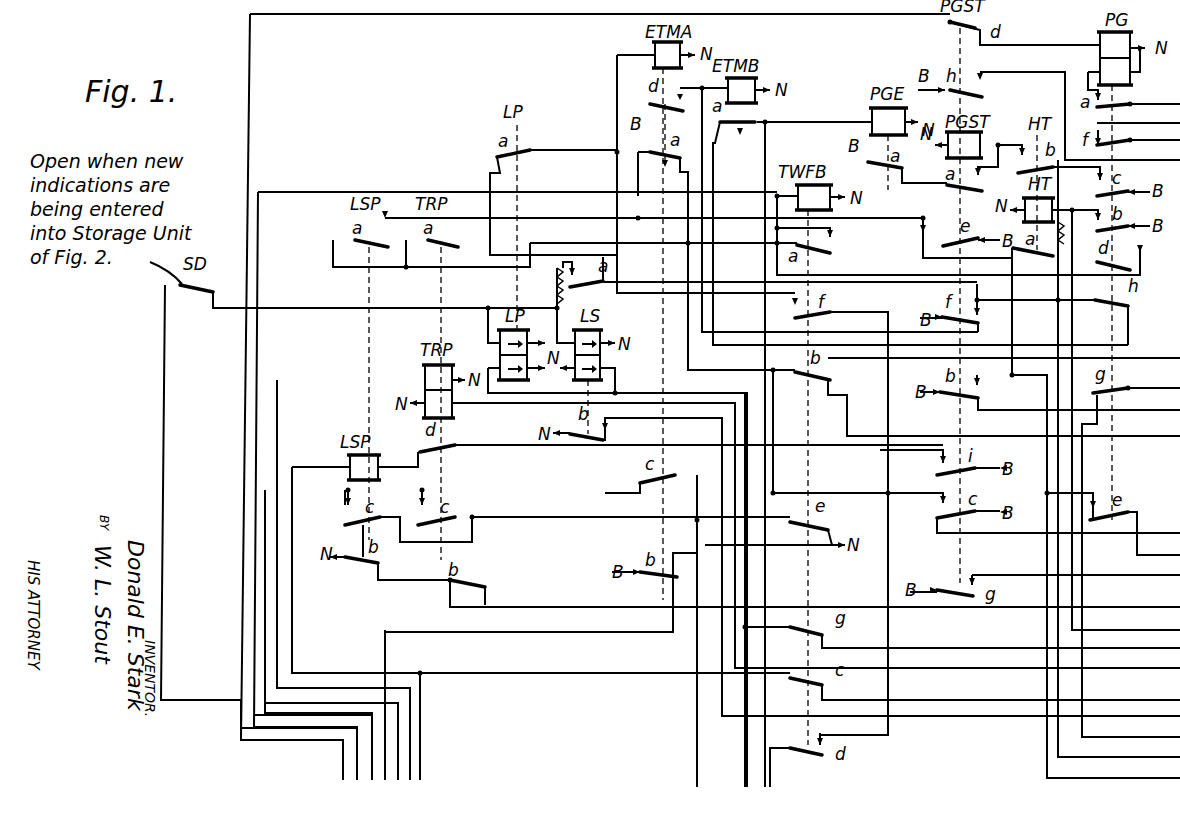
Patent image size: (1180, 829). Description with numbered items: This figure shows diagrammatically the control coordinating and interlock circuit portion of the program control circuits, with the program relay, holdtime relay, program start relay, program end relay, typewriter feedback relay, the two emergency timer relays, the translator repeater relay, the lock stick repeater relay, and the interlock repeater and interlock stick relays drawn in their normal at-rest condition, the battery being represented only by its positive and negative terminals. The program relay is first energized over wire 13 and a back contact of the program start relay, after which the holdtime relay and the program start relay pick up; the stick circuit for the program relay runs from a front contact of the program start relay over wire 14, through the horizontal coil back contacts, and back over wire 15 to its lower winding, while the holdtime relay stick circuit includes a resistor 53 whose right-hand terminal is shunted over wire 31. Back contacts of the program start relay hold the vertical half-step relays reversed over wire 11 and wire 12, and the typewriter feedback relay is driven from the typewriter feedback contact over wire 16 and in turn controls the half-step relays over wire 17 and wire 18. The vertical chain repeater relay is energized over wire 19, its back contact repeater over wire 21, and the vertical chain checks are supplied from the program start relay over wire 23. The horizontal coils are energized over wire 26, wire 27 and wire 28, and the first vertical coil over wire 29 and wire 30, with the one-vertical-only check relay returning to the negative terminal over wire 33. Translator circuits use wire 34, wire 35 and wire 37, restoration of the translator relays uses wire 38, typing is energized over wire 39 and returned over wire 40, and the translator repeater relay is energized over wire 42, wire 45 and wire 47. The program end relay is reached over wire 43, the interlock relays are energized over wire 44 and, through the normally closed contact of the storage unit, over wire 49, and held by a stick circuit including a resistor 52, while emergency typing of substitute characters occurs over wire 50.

The wire 11 is at (1079, 406).
The wire 12 is at (1058, 529).
The wire 13 is at (357, 753).
The wire 14 is at (1113, 771).
The wire 15 is at (1155, 104).
The wire 16 is at (300, 766).
The wire 17 is at (1004, 351).
The wire 18 is at (1013, 430).
The wire 19 is at (1158, 549).
The wire 21 is at (1119, 751).
The wire 23 is at (1076, 569).
The wire 26 is at (1122, 160).
The wire 27 is at (1155, 141).
The wire 28 is at (1138, 123).
The wire 29 is at (1154, 382).
The wire 30 is at (1131, 731).
The wire 31 is at (1126, 623).
The wire 33 is at (815, 602).
The wire 34 is at (410, 693).
The wire 35 is at (1001, 694).
The wire 37 is at (951, 712).
The wire 38 is at (770, 775).
The wire 39 is at (695, 775).
The wire 40 is at (357, 774).
The wire 42 is at (398, 717).
The wire 43 is at (768, 732).
The wire 44 is at (745, 775).
The wire 45 is at (1001, 643).
The wire 47 is at (957, 663).
The wire 49 is at (372, 742).
The wire 50 is at (385, 767).
The resistor 52 is at (556, 290).
The resistor 53 is at (1062, 222).